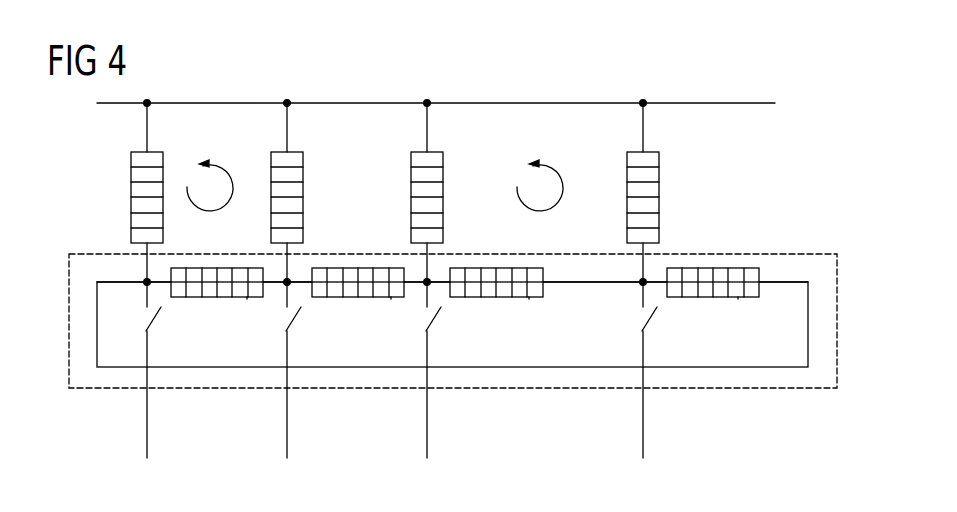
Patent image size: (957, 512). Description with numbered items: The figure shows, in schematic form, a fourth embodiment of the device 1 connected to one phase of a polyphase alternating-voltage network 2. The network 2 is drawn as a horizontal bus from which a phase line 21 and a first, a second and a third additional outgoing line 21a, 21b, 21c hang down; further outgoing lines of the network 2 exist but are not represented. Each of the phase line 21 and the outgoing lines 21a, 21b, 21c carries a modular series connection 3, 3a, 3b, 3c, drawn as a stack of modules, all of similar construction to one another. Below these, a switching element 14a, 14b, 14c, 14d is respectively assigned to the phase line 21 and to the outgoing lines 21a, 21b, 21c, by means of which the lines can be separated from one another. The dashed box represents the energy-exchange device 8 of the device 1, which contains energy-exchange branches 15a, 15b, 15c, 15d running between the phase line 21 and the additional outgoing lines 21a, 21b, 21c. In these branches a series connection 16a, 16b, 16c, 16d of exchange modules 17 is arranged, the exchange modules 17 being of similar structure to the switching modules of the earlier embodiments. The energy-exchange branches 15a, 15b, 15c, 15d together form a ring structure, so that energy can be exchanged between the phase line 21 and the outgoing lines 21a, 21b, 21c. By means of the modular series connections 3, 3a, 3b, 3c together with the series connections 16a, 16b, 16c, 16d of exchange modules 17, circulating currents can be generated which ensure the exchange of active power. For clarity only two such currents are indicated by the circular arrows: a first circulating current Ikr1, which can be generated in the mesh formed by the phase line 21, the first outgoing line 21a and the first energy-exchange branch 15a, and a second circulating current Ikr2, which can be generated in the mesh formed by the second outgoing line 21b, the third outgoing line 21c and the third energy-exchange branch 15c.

The device 1 is at (793, 135).
The polyphase alternating-voltage network 2 is at (717, 83).
The modular series connection 3 is at (131, 186).
The modular series connection 3a is at (303, 181).
The modular series connection 3b is at (443, 181).
The modular series connection 3c is at (659, 181).
The energy-exchange device 8 is at (730, 388).
The switching element 14a is at (155, 324).
The switching element 14b is at (295, 324).
The switching element 14c is at (433, 324).
The switching element 14d is at (650, 325).
The energy-exchange branch 15a is at (160, 289).
The energy-exchange branch 15b is at (300, 289).
The energy-exchange branch 15c is at (574, 283).
The energy-exchange branch 15d is at (808, 318).
The series connection of exchange modules 16a is at (247, 300).
The series connection of exchange modules 16b is at (391, 300).
The series connection of exchange modules 16c is at (529, 300).
The series connection of exchange modules 16d is at (737, 300).
The exchange module 17 is at (240, 268).
The phase line 21 is at (147, 128).
The first additional outgoing line 21a is at (287, 125).
The second additional outgoing line 21b is at (427, 125).
The third additional outgoing line 21c is at (643, 125).
The first circulating current Ikr1 is at (221, 162).
The second circulating current Ikr2 is at (549, 162).